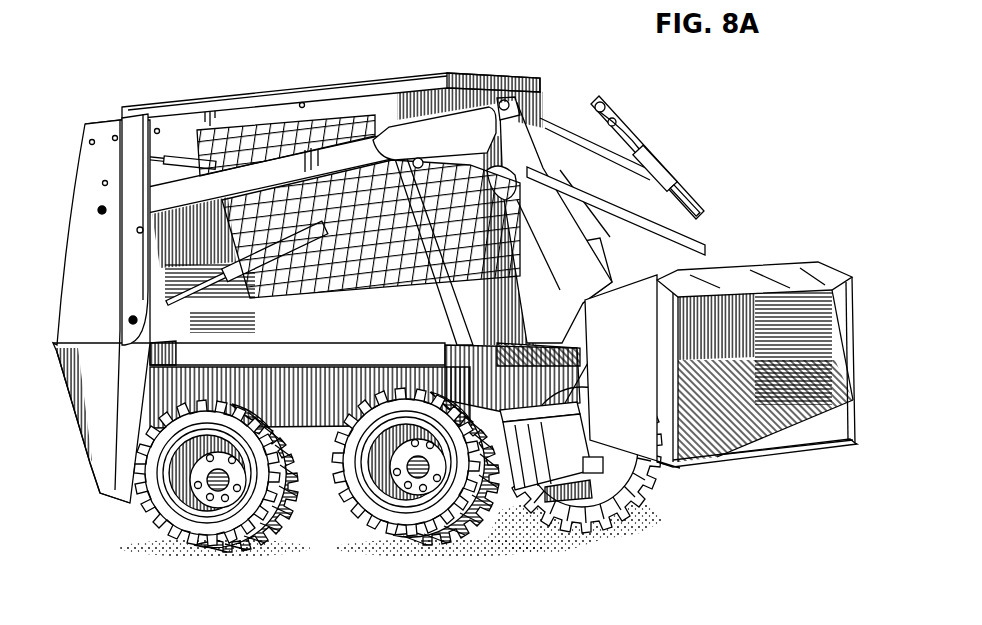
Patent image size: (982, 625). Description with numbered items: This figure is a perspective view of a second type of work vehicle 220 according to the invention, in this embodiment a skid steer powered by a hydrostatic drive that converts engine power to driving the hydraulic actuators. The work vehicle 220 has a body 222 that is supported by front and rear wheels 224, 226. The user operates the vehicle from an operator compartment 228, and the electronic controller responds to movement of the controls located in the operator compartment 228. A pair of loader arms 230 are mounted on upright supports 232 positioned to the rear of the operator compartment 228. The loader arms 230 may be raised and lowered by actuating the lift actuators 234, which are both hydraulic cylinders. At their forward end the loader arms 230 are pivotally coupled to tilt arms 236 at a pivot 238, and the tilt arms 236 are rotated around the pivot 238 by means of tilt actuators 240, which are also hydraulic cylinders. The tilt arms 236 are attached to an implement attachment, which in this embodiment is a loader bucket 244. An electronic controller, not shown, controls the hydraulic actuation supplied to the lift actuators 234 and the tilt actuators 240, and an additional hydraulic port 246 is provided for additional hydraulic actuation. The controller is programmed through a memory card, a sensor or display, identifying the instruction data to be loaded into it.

The work vehicle 220 is at (526, 68).
The body 222 is at (294, 57).
The front wheels 224 is at (420, 548).
The rear wheels 226 is at (242, 548).
The operator compartment 228 is at (517, 142).
The loader arms 230 is at (273, 162).
The upright supports 232 is at (60, 200).
The lift actuators 234 is at (100, 493).
The tilt arms 236 is at (690, 235).
The pivot 238 is at (610, 107).
The tilt actuators 240 is at (678, 192).
The loader bucket 244 is at (798, 277).
The additional hydraulic port 246 is at (118, 197).